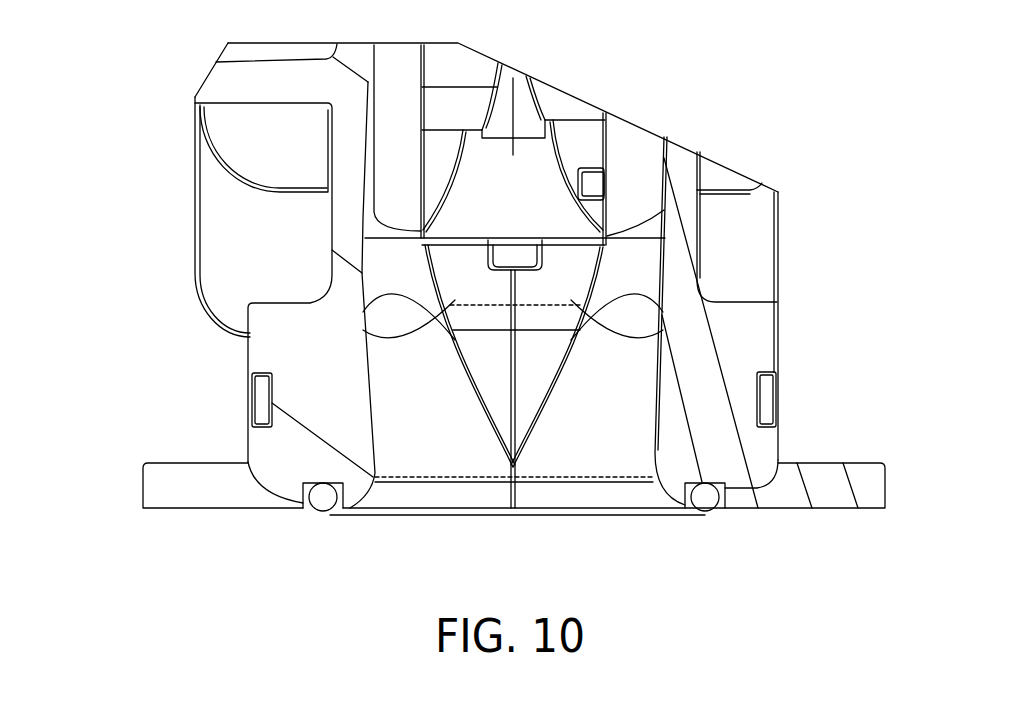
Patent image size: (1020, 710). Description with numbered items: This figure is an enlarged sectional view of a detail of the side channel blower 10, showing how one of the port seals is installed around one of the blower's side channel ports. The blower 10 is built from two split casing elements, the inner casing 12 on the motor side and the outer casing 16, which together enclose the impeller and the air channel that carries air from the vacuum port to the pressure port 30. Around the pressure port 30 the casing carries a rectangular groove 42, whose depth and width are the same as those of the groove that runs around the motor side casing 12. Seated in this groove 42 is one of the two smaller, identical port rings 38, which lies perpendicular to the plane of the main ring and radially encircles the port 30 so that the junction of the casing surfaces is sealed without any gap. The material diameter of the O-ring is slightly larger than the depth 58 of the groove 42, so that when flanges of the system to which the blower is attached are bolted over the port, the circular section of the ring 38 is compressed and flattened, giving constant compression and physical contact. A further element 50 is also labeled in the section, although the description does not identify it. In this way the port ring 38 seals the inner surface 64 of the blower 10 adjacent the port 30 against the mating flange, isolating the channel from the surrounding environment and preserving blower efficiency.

The side channel blower 10 is at (739, 108).
The inner casing element 12 is at (790, 308).
The outer casing 16 is at (185, 211).
The pressure port 30 is at (489, 478).
The port ring 38 is at (325, 508).
The rectangular groove 42 is at (248, 462).
The center divider 50 is at (515, 487).
The depth of groove 58 is at (778, 477).
The inner surface of blower adjacent port 64 is at (827, 508).